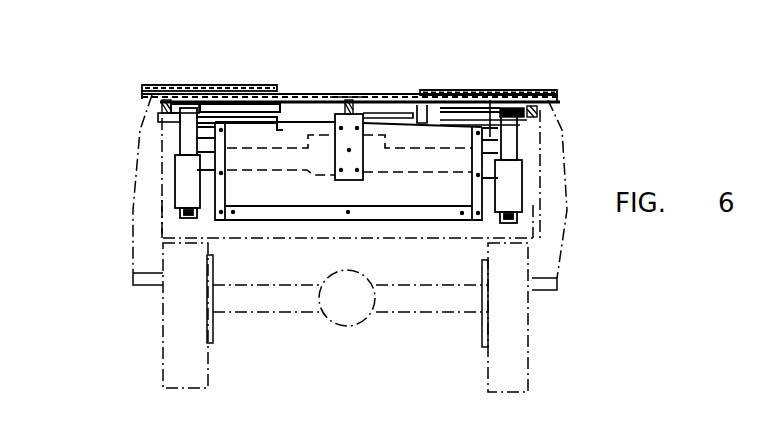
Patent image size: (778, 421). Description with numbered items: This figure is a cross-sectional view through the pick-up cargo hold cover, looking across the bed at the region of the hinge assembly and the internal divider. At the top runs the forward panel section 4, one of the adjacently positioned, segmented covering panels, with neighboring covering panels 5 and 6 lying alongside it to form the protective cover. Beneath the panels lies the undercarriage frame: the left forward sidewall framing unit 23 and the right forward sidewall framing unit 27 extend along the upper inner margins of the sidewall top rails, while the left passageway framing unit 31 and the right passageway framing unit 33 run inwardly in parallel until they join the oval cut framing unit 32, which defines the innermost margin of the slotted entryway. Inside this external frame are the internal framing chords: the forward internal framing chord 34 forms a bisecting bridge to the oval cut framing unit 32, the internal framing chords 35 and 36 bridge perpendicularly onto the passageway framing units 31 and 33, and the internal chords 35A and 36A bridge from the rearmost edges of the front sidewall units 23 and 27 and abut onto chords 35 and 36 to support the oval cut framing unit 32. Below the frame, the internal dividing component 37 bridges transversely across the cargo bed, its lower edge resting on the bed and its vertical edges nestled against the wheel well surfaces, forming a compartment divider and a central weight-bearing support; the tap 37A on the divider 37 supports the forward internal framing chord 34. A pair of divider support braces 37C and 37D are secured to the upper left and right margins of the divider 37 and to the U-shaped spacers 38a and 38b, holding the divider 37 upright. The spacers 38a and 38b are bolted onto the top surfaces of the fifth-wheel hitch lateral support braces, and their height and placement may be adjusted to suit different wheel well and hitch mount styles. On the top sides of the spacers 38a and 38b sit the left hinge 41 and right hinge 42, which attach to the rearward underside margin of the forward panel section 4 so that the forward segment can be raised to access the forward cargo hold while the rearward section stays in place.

The forward panel section 4 is at (382, 96).
The covering panel 5 is at (490, 93).
The covering panel 6 is at (220, 84).
The left forward sidewall framing unit 23 is at (538, 107).
The right forward sidewall framing unit 27 is at (165, 108).
The left passageway framing unit 31 is at (418, 122).
The oval cut framing unit 32 is at (303, 96).
The right passageway framing unit 33 is at (285, 119).
The forward internal framing chord 34 is at (337, 92).
The internal framing chord 35 is at (463, 96).
The internal chord 35A is at (442, 92).
The internal framing chord 36 is at (243, 92).
The internal chord 36A is at (232, 84).
The internal dividing component 37 is at (290, 210).
The tap 37A is at (362, 157).
The divider support brace 37C is at (490, 100).
The divider support brace 37D is at (215, 88).
The U-shaped spacer 38a is at (515, 148).
The U-shaped spacer 38b is at (180, 132).
The left hinge 41 is at (517, 126).
The right hinge 42 is at (177, 123).